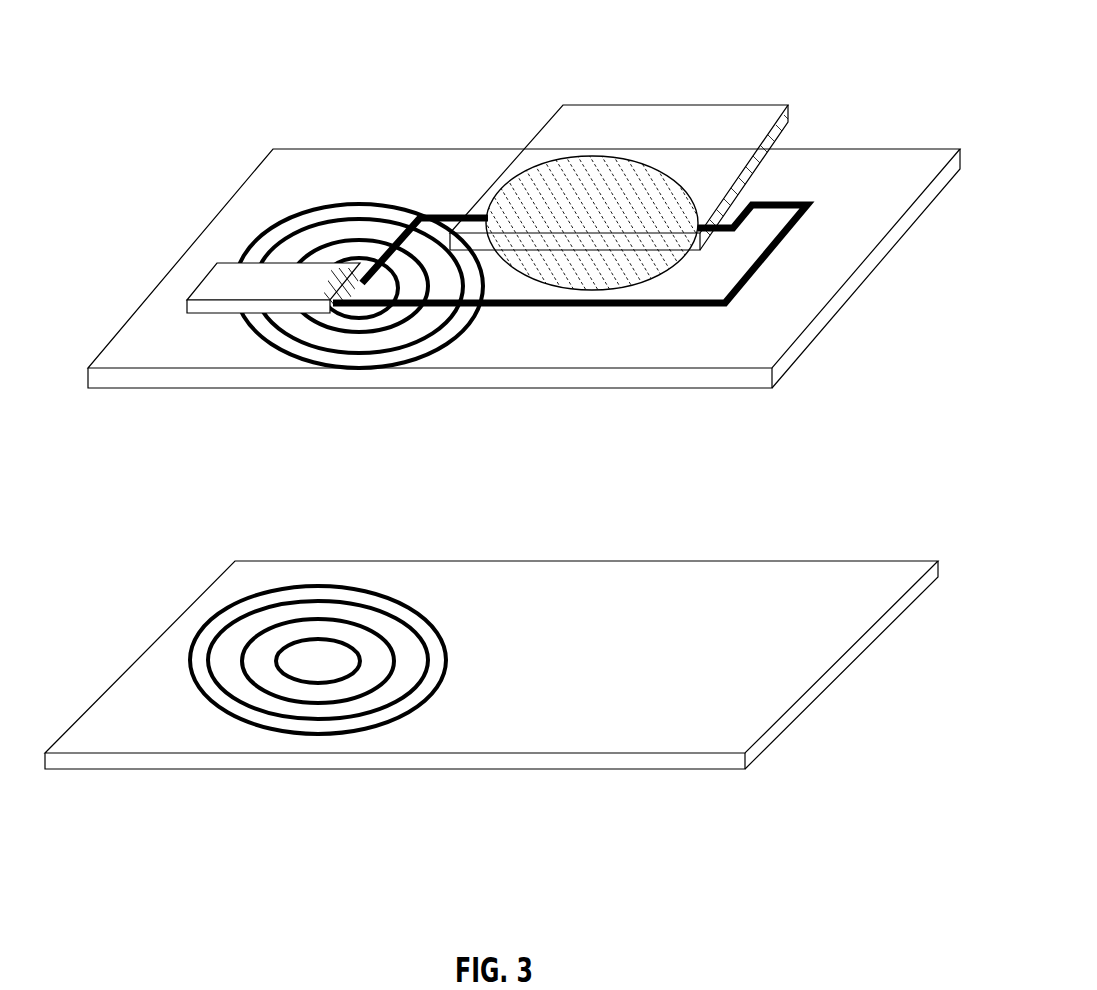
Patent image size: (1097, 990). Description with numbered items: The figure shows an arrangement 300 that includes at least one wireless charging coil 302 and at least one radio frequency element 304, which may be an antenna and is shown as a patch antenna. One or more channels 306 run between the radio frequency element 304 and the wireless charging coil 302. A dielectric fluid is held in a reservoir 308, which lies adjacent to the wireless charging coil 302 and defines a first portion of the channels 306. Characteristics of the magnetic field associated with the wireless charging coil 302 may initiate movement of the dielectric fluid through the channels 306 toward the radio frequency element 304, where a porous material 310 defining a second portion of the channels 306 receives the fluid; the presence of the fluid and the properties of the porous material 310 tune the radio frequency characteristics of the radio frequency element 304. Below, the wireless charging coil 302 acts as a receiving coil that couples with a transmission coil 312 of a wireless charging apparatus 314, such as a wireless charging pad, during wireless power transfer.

The arrangement 300 is at (826, 66).
The wireless charging coil 302 is at (348, 203).
The radio frequency element 304 is at (647, 128).
The channels 306 is at (550, 308).
The reservoir 308 is at (217, 297).
The porous material 310 is at (597, 278).
The transmission coil 312 is at (205, 626).
The wireless charging apparatus 314 is at (883, 578).